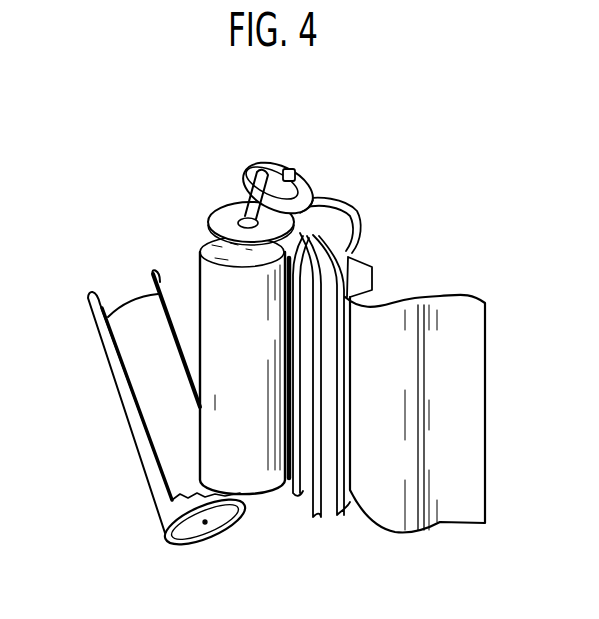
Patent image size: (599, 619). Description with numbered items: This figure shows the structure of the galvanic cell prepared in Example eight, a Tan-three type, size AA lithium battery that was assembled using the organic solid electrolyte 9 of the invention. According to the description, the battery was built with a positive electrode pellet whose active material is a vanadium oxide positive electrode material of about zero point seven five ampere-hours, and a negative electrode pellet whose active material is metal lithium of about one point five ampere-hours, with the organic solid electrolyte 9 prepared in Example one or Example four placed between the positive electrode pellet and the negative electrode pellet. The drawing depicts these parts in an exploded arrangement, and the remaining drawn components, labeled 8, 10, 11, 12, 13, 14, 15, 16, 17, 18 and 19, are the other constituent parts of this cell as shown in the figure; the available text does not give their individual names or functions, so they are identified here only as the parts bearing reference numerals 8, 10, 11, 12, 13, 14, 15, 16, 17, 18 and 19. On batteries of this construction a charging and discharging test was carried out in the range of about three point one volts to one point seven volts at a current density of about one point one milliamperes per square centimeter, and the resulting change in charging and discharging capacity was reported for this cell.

The peg 8 is at (285, 168).
The organic solid electrolyte 9 is at (250, 179).
The disc 10 is at (208, 213).
The ring 11 is at (308, 197).
The strip 12 is at (355, 218).
The flap 13 is at (373, 276).
The sheet 14 is at (485, 322).
The sheet 15 is at (318, 520).
The sheet 16 is at (292, 498).
The sheet 17 is at (346, 510).
The end cap 18 is at (178, 547).
The tube 19 is at (105, 362).